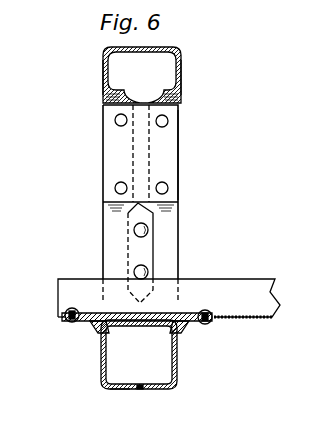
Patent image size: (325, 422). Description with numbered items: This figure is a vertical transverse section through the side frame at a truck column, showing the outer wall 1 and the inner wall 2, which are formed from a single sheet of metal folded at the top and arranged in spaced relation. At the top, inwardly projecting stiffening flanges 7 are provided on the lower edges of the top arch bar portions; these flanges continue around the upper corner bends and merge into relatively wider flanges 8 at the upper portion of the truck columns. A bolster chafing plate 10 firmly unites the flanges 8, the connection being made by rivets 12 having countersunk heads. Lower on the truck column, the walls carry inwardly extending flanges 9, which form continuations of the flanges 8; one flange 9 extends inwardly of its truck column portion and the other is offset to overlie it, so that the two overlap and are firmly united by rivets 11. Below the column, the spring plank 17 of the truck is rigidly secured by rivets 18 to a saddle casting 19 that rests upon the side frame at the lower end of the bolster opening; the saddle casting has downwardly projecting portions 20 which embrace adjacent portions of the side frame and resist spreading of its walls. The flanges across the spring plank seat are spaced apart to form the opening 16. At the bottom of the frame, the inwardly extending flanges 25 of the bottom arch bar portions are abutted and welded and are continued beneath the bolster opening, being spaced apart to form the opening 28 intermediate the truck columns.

The outer wall 1 is at (104, 68).
The inner wall 2 is at (182, 75).
The stiffening flanges 7 is at (142, 75).
The flanges 8 is at (123, 152).
The flanges 9 is at (147, 258).
The bolster chafing plates 10 is at (172, 138).
The rivets 11 is at (137, 233).
The rivets 12 is at (155, 127).
The opening 16 is at (143, 323).
The spring plank 17 is at (236, 281).
The rivets 18 is at (74, 323).
The saddle casting 19 is at (60, 320).
The downwardly projecting portions 20 is at (99, 334).
The flanges 25 is at (124, 389).
The opening 28 is at (142, 389).